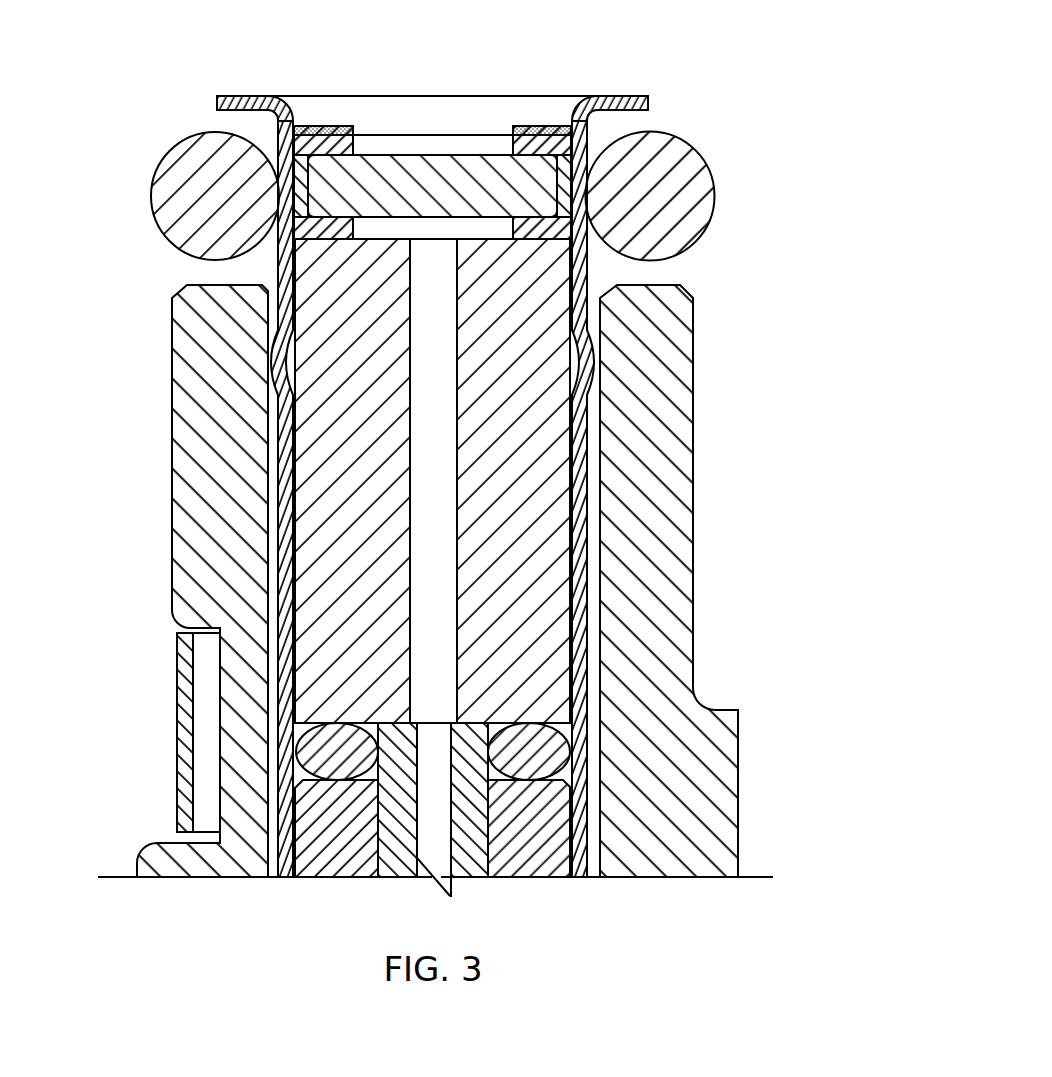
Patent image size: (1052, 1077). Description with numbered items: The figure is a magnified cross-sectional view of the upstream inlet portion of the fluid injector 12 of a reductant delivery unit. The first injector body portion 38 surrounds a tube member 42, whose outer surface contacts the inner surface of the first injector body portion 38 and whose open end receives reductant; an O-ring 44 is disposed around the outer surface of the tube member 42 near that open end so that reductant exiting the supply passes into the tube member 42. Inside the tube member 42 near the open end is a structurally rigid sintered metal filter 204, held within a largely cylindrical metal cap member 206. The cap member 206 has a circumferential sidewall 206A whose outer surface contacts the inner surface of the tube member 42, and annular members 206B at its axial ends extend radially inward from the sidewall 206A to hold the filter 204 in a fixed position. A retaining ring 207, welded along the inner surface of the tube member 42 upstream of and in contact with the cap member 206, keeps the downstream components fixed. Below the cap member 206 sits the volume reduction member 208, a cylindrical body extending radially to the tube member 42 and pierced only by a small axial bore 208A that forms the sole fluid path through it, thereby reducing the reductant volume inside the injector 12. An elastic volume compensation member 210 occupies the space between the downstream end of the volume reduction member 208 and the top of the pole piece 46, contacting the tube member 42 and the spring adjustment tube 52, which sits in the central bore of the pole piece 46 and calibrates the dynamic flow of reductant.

The fluid injector 12 is at (760, 51).
The first injector body portion 38 is at (677, 388).
The tube member 42 is at (235, 95).
The O-ring 44 is at (666, 155).
The pole piece 46 is at (320, 822).
The spring adjustment tube 52 is at (472, 822).
The filter 204 is at (423, 185).
The cap member 206 is at (505, 135).
The sidewall 206A is at (567, 182).
The annular members 206B is at (343, 228).
The retaining ring 207 is at (531, 133).
The volume reduction member 208 is at (521, 489).
The bore 208A is at (440, 612).
The volume compensation member 210 is at (340, 740).